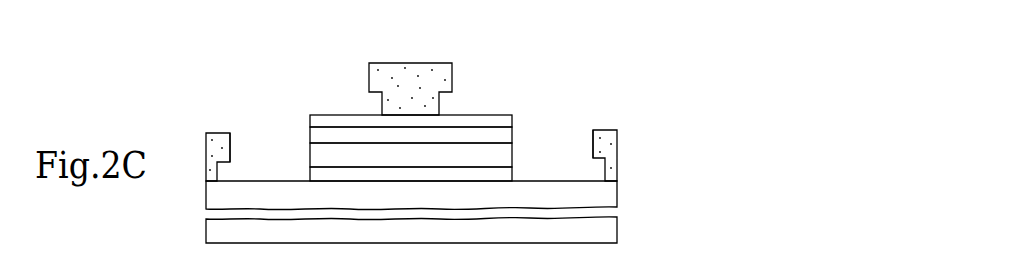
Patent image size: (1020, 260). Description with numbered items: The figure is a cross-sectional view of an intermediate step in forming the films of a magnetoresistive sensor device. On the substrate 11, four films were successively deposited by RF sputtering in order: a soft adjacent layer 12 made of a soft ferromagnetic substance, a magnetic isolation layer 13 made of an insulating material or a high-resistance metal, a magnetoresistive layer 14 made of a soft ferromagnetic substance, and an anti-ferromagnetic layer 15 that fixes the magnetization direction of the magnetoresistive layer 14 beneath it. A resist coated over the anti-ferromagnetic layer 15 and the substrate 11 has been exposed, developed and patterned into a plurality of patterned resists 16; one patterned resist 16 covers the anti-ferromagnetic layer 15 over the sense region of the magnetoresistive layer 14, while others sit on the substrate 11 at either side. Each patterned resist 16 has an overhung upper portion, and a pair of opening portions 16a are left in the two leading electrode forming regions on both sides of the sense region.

The substrate 11 is at (437, 212).
The soft adjacent layer 12 is at (507, 177).
The magnetic isolation layer 13 is at (317, 155).
The magnetoresistive layer 14 is at (500, 133).
The anti-ferromagnetic layer 15 is at (490, 112).
The patterned resist 16 is at (417, 70).
The opening portion 16a is at (250, 158).